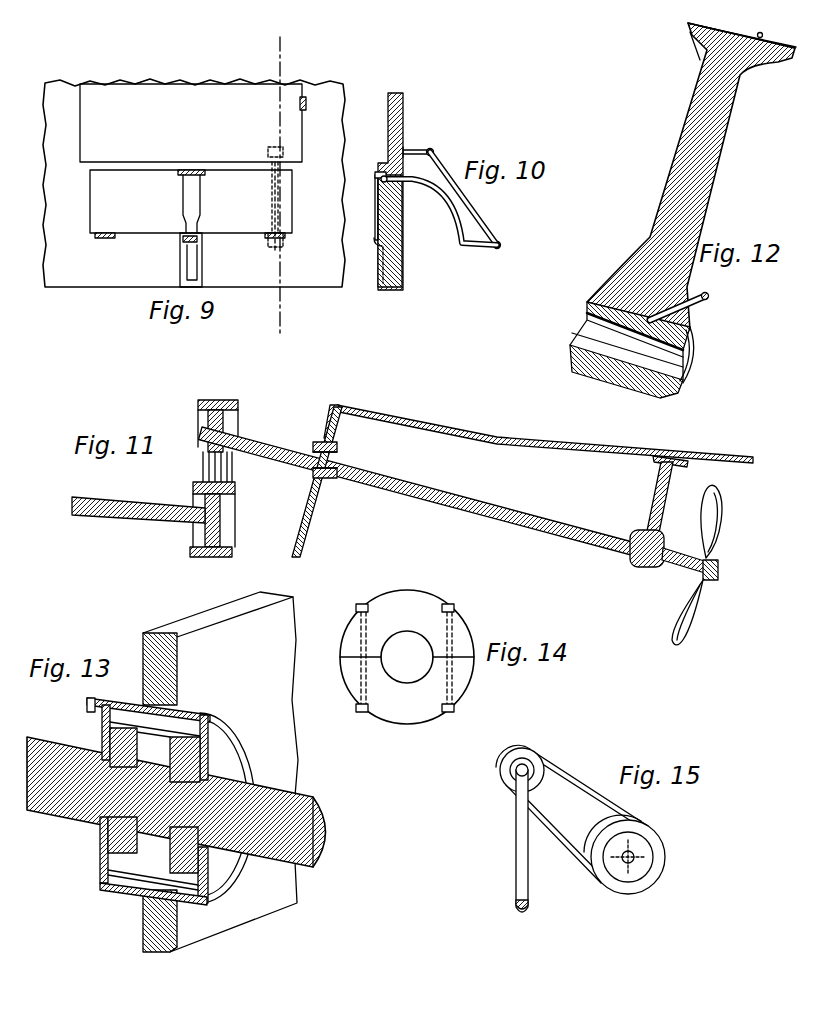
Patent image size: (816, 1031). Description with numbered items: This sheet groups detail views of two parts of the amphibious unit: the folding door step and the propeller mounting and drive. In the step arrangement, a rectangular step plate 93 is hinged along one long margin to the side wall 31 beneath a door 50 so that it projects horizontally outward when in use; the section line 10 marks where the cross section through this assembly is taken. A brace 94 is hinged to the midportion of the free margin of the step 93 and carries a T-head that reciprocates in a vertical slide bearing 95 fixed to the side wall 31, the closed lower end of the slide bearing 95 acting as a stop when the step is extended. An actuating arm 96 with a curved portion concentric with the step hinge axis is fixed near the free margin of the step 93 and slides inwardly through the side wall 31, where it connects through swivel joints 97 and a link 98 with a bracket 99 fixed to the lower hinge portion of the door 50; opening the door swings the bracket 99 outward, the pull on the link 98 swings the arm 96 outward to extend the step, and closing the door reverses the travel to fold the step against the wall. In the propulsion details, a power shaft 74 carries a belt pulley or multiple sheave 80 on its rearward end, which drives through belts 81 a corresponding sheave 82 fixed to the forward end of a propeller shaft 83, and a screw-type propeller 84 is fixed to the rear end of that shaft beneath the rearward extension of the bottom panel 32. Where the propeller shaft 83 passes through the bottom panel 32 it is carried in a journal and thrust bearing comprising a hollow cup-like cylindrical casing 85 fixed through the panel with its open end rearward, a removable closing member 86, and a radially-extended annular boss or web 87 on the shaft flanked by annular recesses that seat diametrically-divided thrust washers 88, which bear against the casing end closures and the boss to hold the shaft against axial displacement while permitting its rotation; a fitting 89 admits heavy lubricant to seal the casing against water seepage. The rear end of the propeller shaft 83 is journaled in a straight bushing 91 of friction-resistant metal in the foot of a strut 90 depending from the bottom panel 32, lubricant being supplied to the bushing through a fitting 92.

In FIG. 9, the section line 10— 10 is at (285, 185).
In FIG. 9, the side wall 31 is at (194, 183).
In FIG. 11, the bottom panel 32 is at (532, 445).
In FIG. 13, the bottom panel 32 is at (220, 772).
In FIG. 9, the door 50 is at (193, 123).
In FIG. 10, the door 50 is at (388, 124).
In FIG. 11, the power shaft 74 is at (122, 500).
In FIG. 15, the power shaft 74 is at (634, 857).
In FIG. 11, the belt pulley or multiple sheave 80 is at (200, 537).
In FIG. 15, the belt pulley or multiple sheave 80 is at (640, 870).
In FIG. 11, the belts 81 is at (232, 470).
In FIG. 15, the belts 81 is at (586, 789).
In FIG. 11, the sheave 82 is at (240, 412).
In FIG. 15, the sheave 82 is at (510, 755).
In FIG. 11, the propeller shaft 83 is at (408, 478).
In FIG. 13, the propeller shaft 83 is at (296, 808).
In FIG. 15, the propeller shaft 83 is at (515, 865).
In FIG. 11, the screw-type propeller 84 is at (715, 517).
In FIG. 11, the cylindrical casing 85 is at (337, 450).
In FIG. 13, the cylindrical casing 85 is at (196, 712).
In FIG. 13, the closing member 86 is at (227, 808).
In FIG. 13, the annular boss or web 87 is at (128, 880).
In FIG. 13, the thrust washers 88 is at (100, 833).
In FIG. 14, the thrust washers 88 is at (407, 657).
In FIG. 11, the fitting 89 is at (328, 445).
In FIG. 13, the fitting 89 is at (95, 706).
In FIG. 12, the strut 90 is at (693, 163).
In FIG. 11, the strut 90 is at (657, 500).
In FIG. 12, the straight bushing 91 is at (600, 330).
In FIG. 12, the fitting 92 is at (707, 300).
In FIG. 9, the step plate 93 is at (191, 204).
In FIG. 10, the step plate 93 is at (378, 199).
In FIG. 9, the brace 94 is at (192, 203).
In FIG. 10, the brace 94 is at (375, 219).
In FIG. 9, the vertical slide bearing 95 is at (198, 266).
In FIG. 10, the vertical slide bearing 95 is at (381, 272).
In FIG. 10, the actuating arm 96 is at (455, 208).
In FIG. 10, the swivel joints 97 is at (433, 150).
In FIG. 10, the link 98 is at (472, 208).
In FIG. 10, the bracket 99 is at (415, 148).